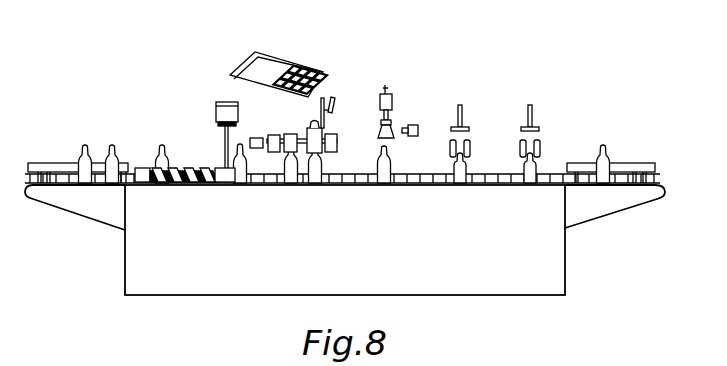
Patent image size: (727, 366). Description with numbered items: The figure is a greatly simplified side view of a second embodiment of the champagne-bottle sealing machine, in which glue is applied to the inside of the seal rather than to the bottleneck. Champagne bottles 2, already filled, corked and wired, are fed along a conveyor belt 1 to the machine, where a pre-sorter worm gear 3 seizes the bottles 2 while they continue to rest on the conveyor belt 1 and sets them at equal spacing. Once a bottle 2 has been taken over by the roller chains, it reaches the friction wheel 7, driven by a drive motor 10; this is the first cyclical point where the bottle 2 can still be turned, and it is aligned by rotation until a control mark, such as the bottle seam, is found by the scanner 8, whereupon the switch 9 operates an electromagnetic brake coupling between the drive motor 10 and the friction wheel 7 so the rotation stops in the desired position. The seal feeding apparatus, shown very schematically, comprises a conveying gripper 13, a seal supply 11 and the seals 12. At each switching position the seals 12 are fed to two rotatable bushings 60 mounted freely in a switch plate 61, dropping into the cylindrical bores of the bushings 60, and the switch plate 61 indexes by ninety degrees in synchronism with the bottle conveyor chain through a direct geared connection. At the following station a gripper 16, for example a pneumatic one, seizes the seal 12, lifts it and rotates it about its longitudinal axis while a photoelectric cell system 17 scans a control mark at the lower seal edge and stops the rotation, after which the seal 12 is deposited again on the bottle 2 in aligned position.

The conveyor belt 1 is at (55, 178).
The champagne bottles 2 is at (86, 144).
The pre-sorter worm gear 3 is at (152, 170).
The friction wheel 7 is at (222, 185).
The scanner 8 is at (246, 185).
The switch 9 is at (258, 138).
The drive motor 10 is at (218, 110).
The seal supply 11 is at (272, 67).
The seals 12 is at (310, 72).
The conveying gripper 13 is at (316, 122).
The gripper 16 is at (383, 96).
The photoelectric cell system 17 is at (414, 123).
The rotatable bushings 60 is at (338, 146).
The switch plate 61 is at (337, 141).